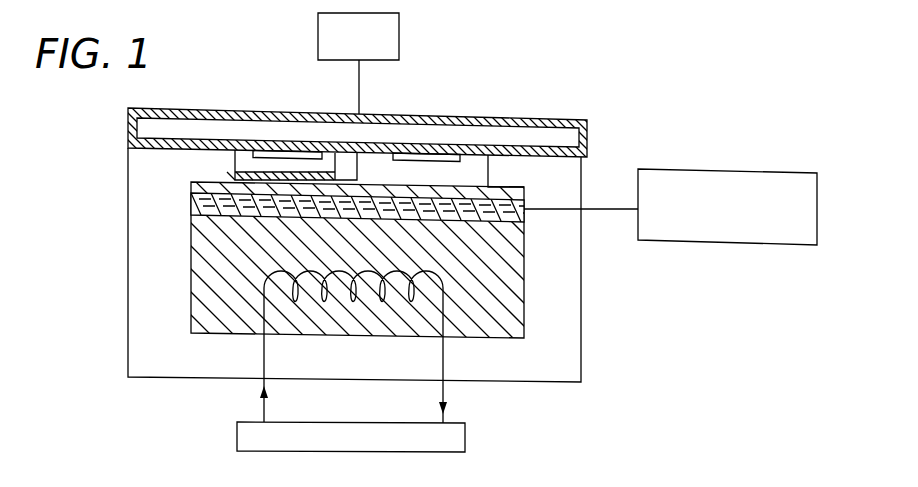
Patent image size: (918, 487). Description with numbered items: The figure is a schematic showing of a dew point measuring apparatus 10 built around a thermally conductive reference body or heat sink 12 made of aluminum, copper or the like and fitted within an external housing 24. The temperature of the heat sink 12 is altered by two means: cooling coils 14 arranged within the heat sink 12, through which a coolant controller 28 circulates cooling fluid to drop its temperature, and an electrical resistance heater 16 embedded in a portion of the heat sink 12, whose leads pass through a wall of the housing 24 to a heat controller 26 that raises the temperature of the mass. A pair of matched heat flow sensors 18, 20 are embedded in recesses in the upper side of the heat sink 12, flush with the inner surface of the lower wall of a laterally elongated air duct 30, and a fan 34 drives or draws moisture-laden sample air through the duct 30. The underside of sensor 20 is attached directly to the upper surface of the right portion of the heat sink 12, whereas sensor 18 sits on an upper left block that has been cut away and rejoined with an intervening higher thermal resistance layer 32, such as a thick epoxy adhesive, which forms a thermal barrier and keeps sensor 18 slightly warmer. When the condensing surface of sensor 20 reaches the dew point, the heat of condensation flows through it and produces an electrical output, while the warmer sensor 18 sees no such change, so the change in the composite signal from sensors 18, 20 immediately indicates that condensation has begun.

The dew point measuring apparatus 10 is at (118, 161).
The heat sink 12 is at (508, 278).
The cooling coils 14 is at (443, 318).
The heater 16 is at (505, 210).
The heat flow sensor 18 is at (285, 151).
The heat flow sensor 20 is at (428, 153).
The housing 24 is at (583, 362).
The heat controller 26 is at (786, 171).
The coolant controller 28 is at (465, 437).
The air duct 30 is at (565, 123).
The higher thermal resistance layer 32 is at (238, 172).
The fan 34 is at (399, 31).